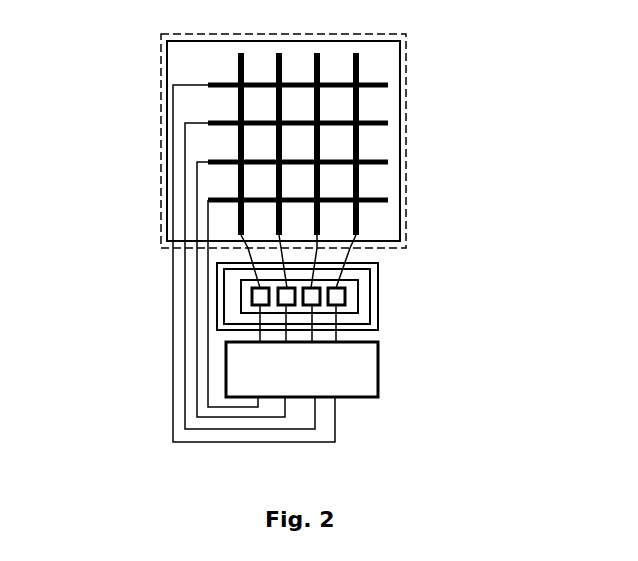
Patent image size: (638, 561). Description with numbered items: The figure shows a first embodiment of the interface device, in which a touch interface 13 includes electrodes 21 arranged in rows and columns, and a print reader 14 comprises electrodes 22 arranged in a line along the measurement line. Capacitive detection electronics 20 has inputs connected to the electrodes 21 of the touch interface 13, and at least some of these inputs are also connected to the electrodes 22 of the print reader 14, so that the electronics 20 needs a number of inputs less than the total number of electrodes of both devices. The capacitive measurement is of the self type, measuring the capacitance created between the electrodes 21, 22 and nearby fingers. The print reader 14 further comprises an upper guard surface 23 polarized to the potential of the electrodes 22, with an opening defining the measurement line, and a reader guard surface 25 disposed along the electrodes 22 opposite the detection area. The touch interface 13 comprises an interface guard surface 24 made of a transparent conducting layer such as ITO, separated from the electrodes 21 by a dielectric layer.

The touch interface 13 is at (163, 142).
The print reader 14 is at (212, 296).
The capacitive detection electronics 20 is at (378, 370).
The electrodes 21 is at (388, 85).
The electrodes 22 is at (375, 286).
The upper guard surface 23 is at (347, 296).
The interface guard surface 24 is at (405, 142).
The reader guard surface 25 is at (378, 315).